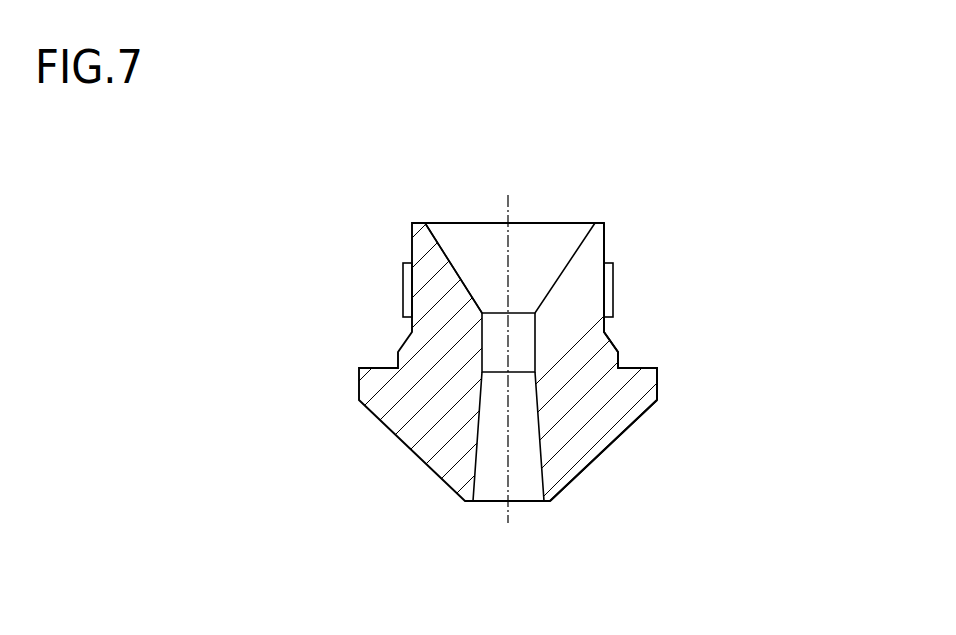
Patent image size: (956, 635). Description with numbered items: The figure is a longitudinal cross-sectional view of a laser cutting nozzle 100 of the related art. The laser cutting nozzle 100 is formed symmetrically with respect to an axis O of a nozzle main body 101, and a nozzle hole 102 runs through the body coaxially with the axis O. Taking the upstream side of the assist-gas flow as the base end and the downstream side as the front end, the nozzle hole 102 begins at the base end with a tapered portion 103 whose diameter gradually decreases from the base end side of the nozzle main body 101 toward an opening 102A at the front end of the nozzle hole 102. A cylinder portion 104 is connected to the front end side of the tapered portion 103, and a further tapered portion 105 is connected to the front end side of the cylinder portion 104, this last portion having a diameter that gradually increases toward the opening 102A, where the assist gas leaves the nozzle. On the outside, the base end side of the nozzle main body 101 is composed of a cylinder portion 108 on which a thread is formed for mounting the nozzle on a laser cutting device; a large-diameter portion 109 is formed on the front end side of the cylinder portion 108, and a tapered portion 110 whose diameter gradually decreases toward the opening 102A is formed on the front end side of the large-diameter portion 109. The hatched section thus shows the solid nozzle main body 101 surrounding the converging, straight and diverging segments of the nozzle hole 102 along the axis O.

The laser cutting nozzle 100 is at (735, 236).
The nozzle main body 101 is at (604, 332).
The nozzle hole 102 is at (482, 242).
The opening 102A is at (528, 502).
The tapered portion 103 is at (449, 262).
The cylinder portion 104 is at (482, 328).
The tapered portion 105 is at (473, 463).
The cylinder portion 108 is at (605, 240).
The large-diameter portion 109 is at (657, 380).
The tapered portion 110 is at (603, 450).
The axis O is at (509, 212).